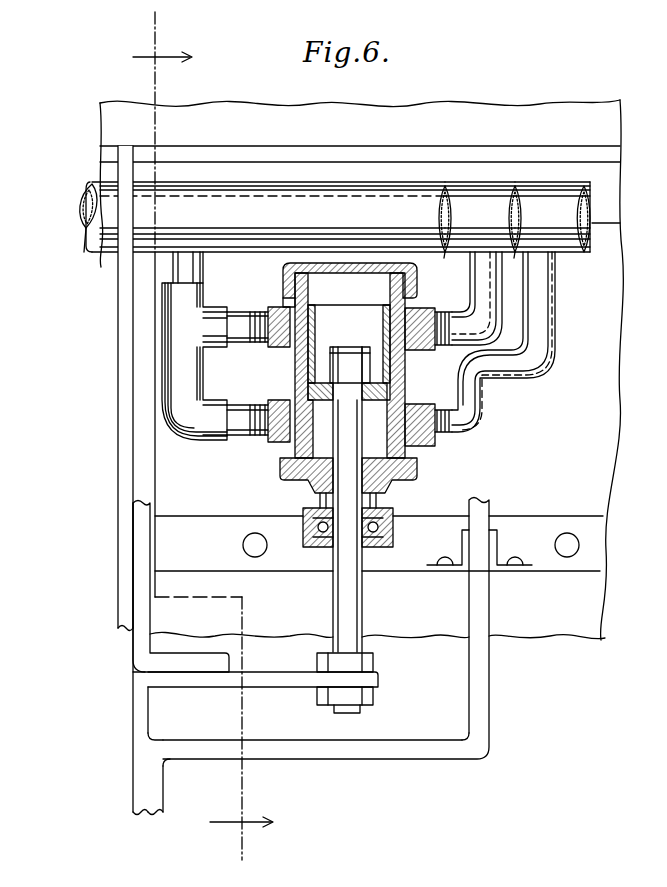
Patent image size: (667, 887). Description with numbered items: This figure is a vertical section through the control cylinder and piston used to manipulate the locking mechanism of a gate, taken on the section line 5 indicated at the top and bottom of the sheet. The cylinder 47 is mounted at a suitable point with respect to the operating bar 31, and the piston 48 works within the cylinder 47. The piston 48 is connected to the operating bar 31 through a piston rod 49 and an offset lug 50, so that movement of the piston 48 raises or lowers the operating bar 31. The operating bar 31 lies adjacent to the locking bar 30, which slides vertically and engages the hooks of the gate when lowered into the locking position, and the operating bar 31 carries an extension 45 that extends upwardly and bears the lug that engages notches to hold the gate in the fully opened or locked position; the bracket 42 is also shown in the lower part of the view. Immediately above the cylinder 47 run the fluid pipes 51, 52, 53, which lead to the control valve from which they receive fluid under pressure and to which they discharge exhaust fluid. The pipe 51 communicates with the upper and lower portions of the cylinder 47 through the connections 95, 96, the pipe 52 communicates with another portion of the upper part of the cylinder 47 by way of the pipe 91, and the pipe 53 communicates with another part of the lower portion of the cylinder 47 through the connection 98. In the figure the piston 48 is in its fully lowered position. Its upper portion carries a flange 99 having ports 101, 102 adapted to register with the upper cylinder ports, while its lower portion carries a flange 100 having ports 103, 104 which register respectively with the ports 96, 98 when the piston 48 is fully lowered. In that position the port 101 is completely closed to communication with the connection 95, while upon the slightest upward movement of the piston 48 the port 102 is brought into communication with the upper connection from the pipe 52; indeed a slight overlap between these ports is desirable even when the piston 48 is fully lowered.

The section line 5- 5 is at (203, 437).
The locking bar 30 is at (158, 790).
The operating bar 31 is at (137, 779).
The bracket 42 is at (490, 716).
The extension 45 is at (140, 656).
The cylinder 47 is at (280, 456).
The piston 48 is at (303, 385).
The piston rod 49 is at (364, 610).
The offset lug 50 is at (275, 680).
The fluid pipe 51 is at (400, 200).
The fluid pipe 52 is at (483, 202).
The fluid pipe 53 is at (563, 202).
The pipe from header to valve 91 is at (412, 325).
The connection 95 is at (290, 305).
The connection 96 is at (268, 434).
The connection 98 is at (456, 414).
The flange 99 is at (331, 316).
The flange 100 is at (292, 485).
The port 101 is at (292, 360).
The port 102 is at (428, 343).
The port 103 is at (290, 398).
The port 104 is at (412, 446).